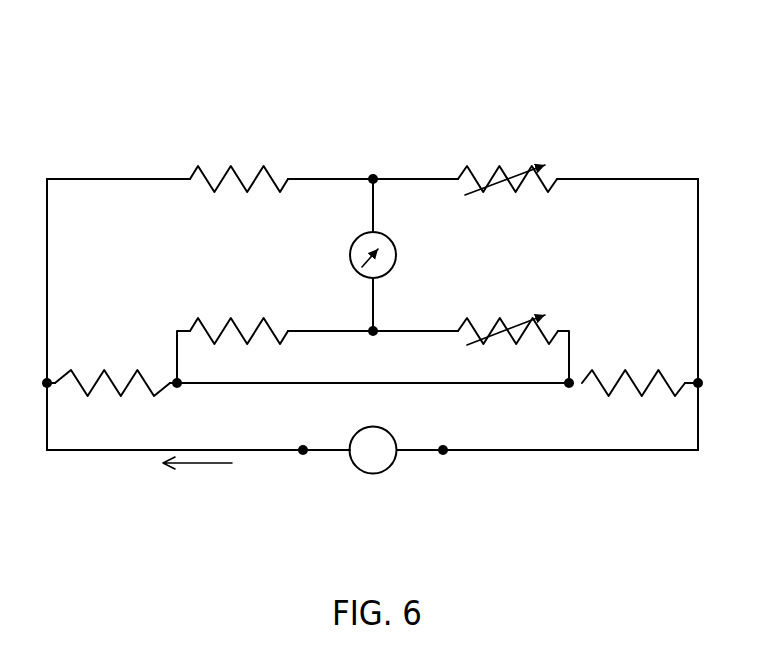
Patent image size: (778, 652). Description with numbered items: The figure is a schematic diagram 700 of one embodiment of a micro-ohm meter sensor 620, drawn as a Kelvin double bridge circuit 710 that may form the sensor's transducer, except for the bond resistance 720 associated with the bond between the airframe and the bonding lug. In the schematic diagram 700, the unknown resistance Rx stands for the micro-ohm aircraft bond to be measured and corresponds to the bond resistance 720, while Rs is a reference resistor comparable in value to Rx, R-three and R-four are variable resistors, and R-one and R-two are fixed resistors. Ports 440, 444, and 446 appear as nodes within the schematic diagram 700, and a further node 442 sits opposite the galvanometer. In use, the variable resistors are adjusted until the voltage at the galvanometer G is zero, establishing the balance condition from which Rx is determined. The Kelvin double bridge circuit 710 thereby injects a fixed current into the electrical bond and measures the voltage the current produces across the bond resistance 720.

The schematic diagram 700 is at (623, 58).
The Kelvin double bridge circuit 710 is at (326, 108).
The port 440 is at (373, 174).
The second bridge node 442 is at (373, 337).
The port 444 is at (303, 456).
The port 446 is at (443, 456).
The micro-ohm meter sensor 620 is at (670, 176).
The bond resistance 720 is at (648, 371).